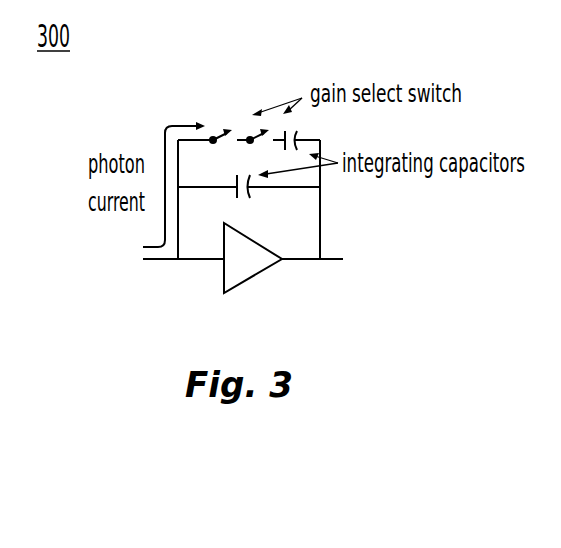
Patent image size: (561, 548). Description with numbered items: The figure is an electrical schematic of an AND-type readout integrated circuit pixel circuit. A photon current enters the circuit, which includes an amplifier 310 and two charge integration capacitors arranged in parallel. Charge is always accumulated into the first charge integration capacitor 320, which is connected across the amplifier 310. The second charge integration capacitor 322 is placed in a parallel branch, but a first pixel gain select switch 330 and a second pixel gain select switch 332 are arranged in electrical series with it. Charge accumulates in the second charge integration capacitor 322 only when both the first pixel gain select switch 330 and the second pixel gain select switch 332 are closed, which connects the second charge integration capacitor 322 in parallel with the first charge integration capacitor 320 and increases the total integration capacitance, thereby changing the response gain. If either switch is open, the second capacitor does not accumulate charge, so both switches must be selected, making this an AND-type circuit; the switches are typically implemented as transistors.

The amplifier 310 is at (242, 272).
The first charge integration capacitor 320 is at (249, 194).
The second charge integration capacitor 322 is at (296, 132).
The first pixel gain select switch 330 is at (216, 130).
The second pixel gain select switch 332 is at (251, 130).